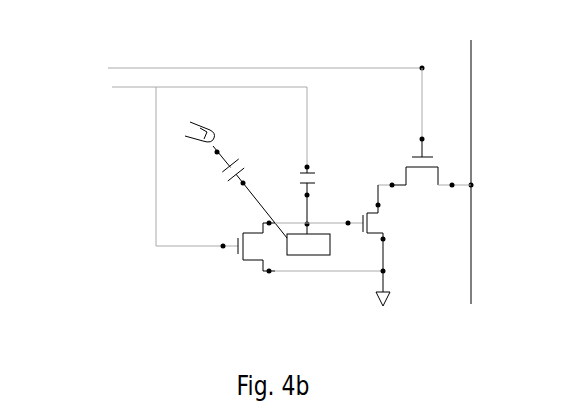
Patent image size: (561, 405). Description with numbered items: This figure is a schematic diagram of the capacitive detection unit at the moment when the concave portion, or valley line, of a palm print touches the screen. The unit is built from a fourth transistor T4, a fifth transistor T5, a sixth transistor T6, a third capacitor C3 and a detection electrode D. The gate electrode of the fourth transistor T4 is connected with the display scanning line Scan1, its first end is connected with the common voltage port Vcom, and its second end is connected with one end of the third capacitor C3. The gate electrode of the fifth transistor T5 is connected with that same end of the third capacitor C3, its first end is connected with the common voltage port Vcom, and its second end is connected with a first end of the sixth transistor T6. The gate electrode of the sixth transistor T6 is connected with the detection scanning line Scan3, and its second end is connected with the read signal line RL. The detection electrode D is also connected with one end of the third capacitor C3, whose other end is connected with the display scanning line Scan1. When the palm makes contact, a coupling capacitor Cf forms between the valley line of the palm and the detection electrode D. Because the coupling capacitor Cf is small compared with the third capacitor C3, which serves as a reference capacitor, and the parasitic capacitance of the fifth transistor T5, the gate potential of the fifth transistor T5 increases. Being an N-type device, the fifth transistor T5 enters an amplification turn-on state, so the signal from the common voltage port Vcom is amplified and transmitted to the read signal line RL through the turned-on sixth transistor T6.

The detection scanning line Scan3 is at (236, 63).
The display scanning line Scan1 is at (178, 87).
The read signal line RL is at (468, 159).
The sixth transistor T6 is at (424, 128).
The third capacitor C3 is at (294, 160).
The coupling capacitor Cf is at (236, 180).
The fourth transistor T4 is at (269, 180).
The detection electrode D is at (308, 245).
The fifth transistor T5 is at (363, 238).
The common voltage port Vcom is at (393, 313).